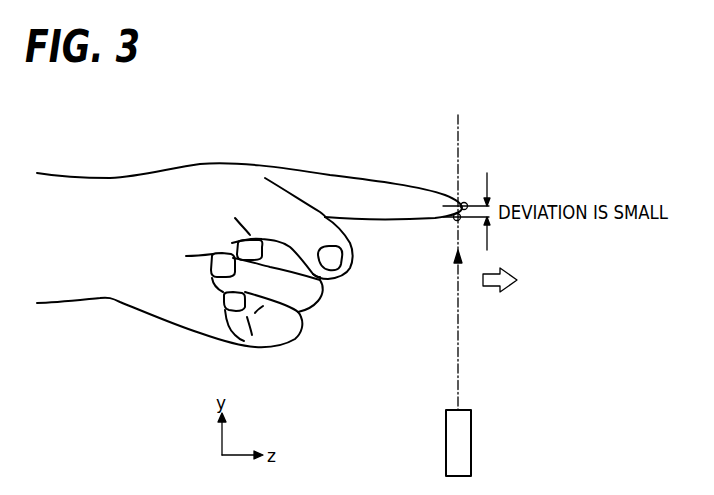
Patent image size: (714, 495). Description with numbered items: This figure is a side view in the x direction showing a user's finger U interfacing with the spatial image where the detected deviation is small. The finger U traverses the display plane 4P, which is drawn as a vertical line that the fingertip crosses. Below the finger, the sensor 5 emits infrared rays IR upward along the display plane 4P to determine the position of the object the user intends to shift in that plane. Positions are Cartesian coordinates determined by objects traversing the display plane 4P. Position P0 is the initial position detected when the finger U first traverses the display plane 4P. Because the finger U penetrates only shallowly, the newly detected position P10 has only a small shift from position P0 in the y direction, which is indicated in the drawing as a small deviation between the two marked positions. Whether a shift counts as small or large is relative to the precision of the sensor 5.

The user's finger U is at (400, 180).
The display plane 4P is at (458, 120).
The initial position P0 is at (465, 202).
The new detected position P10 is at (455, 220).
The infrared rays IR is at (458, 332).
The sensor 5 is at (472, 442).